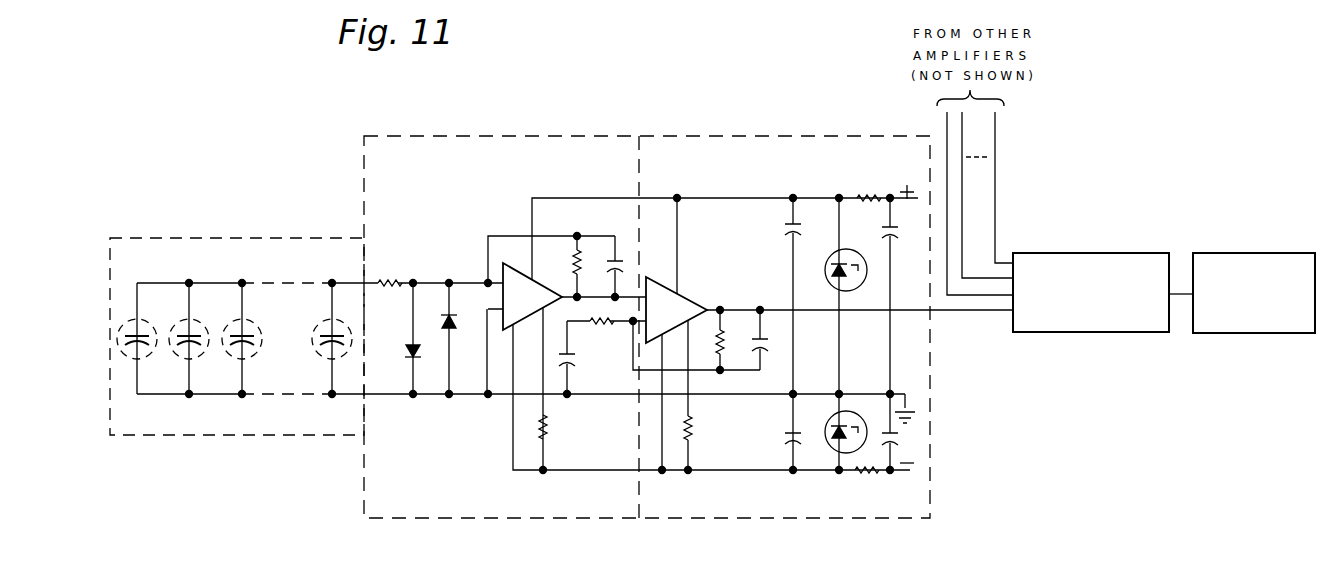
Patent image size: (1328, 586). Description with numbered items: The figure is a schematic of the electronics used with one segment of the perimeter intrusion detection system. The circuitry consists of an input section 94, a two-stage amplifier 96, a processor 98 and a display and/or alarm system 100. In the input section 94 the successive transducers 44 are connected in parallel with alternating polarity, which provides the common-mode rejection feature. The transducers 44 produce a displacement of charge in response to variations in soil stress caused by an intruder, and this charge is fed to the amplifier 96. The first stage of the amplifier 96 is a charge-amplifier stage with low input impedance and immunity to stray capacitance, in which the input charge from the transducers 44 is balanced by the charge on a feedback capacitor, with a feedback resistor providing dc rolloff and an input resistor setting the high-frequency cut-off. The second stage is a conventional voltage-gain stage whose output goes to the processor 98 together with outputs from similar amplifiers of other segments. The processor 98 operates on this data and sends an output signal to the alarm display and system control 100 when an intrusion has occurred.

The transducers 44 is at (258, 324).
The input section 94 is at (184, 238).
The two-stage amplifier 96 is at (753, 128).
The processor 98 is at (1116, 253).
The alarm display and system control 100 is at (1249, 253).